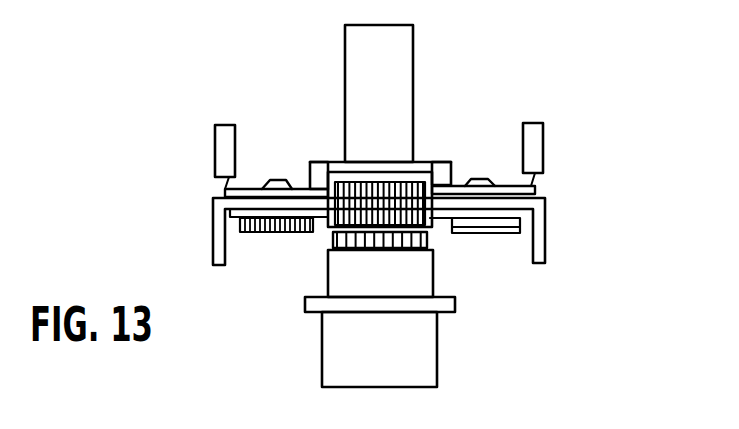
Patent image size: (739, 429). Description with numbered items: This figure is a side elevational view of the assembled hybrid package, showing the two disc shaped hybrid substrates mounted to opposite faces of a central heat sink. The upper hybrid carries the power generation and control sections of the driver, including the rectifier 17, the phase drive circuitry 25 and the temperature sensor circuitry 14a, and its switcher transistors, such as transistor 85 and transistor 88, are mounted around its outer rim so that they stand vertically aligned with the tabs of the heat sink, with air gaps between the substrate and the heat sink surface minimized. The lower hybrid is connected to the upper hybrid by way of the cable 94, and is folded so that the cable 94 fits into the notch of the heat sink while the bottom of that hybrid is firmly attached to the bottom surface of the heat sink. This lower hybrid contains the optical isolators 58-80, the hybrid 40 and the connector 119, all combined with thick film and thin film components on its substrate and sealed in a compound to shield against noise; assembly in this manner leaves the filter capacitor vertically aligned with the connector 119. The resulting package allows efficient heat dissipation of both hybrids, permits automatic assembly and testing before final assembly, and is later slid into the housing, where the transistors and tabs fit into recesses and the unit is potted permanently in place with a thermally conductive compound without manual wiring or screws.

The rectifier 17 is at (363, 83).
The phase drive circuitry 25 is at (433, 160).
The cable 94 is at (443, 232).
The connector 119 is at (358, 355).
The optical isolators 58-80 is at (505, 240).
The hybrid 40 is at (277, 232).
The transistor 85 is at (224, 125).
The transistor 88 is at (543, 148).
The temperature sensor circuitry 14a is at (270, 178).